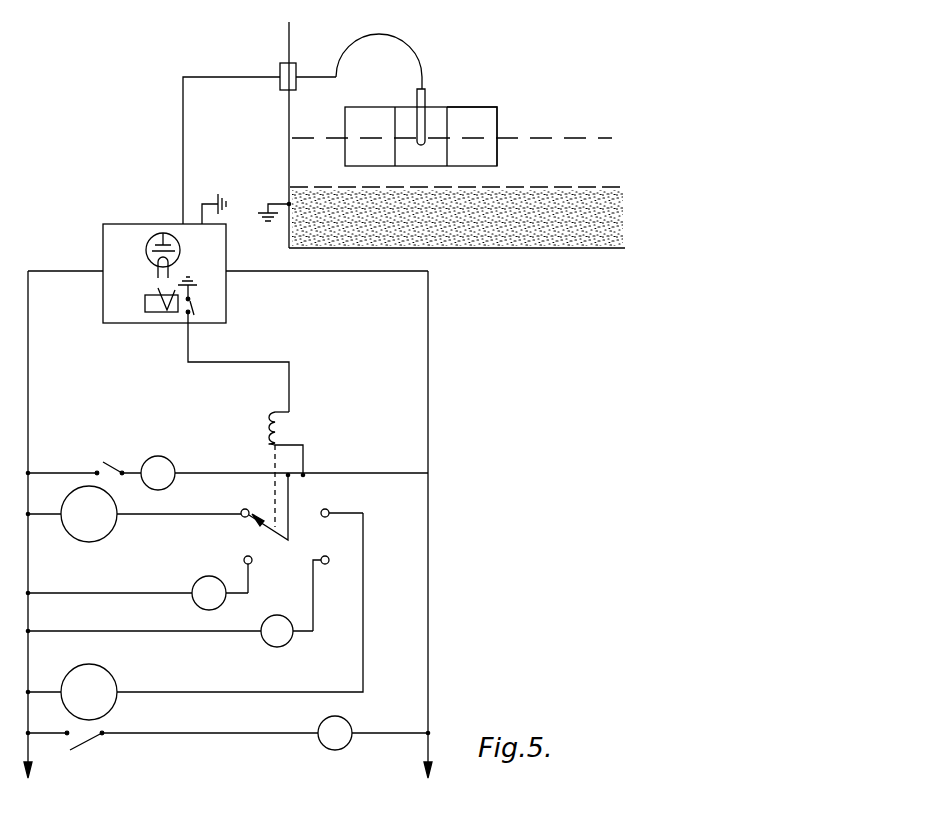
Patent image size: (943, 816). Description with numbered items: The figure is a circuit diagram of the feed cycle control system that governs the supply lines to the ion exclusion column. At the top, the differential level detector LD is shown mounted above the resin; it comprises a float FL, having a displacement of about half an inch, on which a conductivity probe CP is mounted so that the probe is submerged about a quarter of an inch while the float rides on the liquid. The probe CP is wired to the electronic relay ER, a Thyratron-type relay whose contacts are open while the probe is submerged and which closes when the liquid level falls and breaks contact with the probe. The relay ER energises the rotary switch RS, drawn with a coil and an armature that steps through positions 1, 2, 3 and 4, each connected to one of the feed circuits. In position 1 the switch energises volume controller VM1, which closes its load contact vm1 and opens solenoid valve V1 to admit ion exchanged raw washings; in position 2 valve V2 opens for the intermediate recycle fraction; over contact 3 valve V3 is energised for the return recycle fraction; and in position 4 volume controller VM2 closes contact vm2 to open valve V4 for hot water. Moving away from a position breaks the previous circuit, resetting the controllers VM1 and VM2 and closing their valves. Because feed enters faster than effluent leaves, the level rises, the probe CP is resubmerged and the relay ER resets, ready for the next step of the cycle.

The electronic relay ER is at (129, 232).
The float FL is at (365, 119).
The differential level detector LD is at (480, 98).
The conductivity probe CP is at (426, 96).
The rotary switch RS is at (276, 472).
The position 1 is at (246, 503).
The contact 2 is at (237, 573).
The contact 3 is at (329, 593).
The contact 4 is at (341, 503).
The load contact of volume controller VM1 vm1 is at (76, 459).
The load contact of volume controller VM2 vm2 is at (66, 751).
The solenoid controlled valve V1 is at (275, 473).
The solenoid operated valve V2 is at (138, 593).
The valve V3 is at (170, 631).
The valve V4 is at (265, 733).
The volume controller VM1 is at (134, 514).
The volume controller VM2 is at (195, 616).